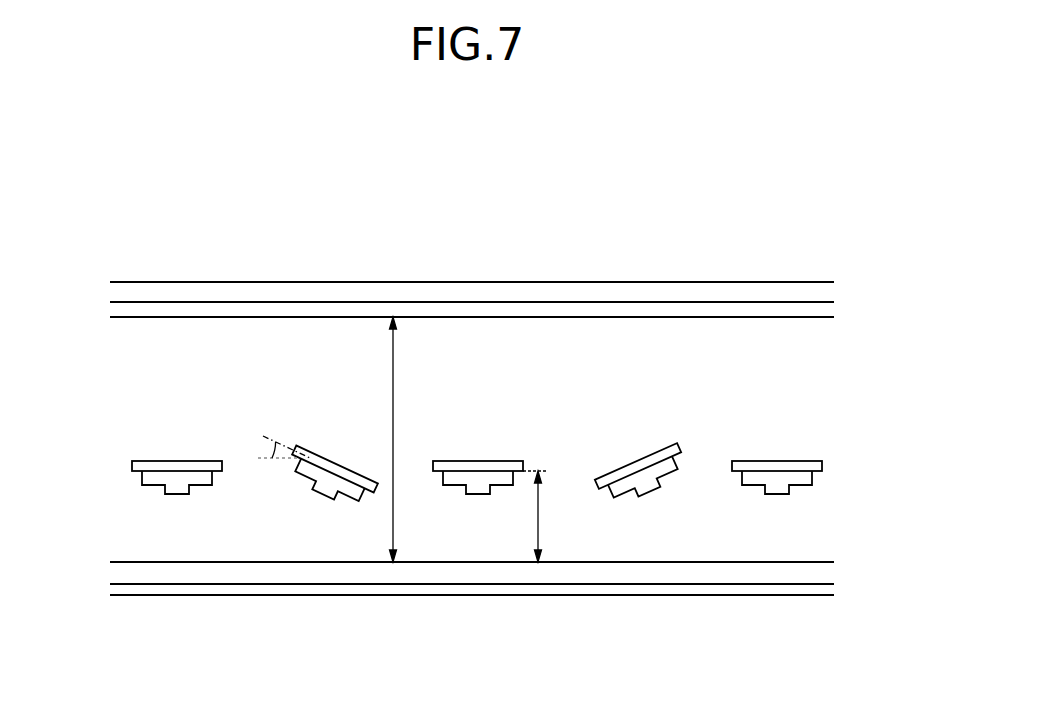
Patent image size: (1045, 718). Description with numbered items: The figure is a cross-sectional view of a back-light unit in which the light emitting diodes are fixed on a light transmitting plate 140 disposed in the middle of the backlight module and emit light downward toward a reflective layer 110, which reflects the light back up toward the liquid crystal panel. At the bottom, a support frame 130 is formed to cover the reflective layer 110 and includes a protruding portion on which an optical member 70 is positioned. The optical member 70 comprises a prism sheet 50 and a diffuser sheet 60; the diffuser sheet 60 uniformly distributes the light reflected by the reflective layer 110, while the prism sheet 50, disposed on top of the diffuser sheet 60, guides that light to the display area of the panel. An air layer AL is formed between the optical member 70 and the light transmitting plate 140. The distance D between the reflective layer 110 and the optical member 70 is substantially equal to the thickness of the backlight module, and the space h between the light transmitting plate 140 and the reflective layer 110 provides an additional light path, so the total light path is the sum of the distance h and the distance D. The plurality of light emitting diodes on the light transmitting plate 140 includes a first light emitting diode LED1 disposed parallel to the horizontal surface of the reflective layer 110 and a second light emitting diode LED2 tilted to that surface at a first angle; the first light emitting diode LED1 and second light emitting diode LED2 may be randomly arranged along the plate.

The optical member 70 is at (472, 251).
The prism sheet 50 is at (214, 290).
The diffuser sheet 60 is at (203, 220).
The air layer AL is at (588, 348).
The distance between reflective layer and optical member D is at (394, 370).
The first light emitting diode LED1 is at (176, 478).
The second light emitting diode LED2 is at (320, 461).
The light transmitting plate 140 is at (494, 465).
The second distance h is at (540, 522).
The support frame 130 is at (562, 588).
The reflective layer 110 is at (730, 572).